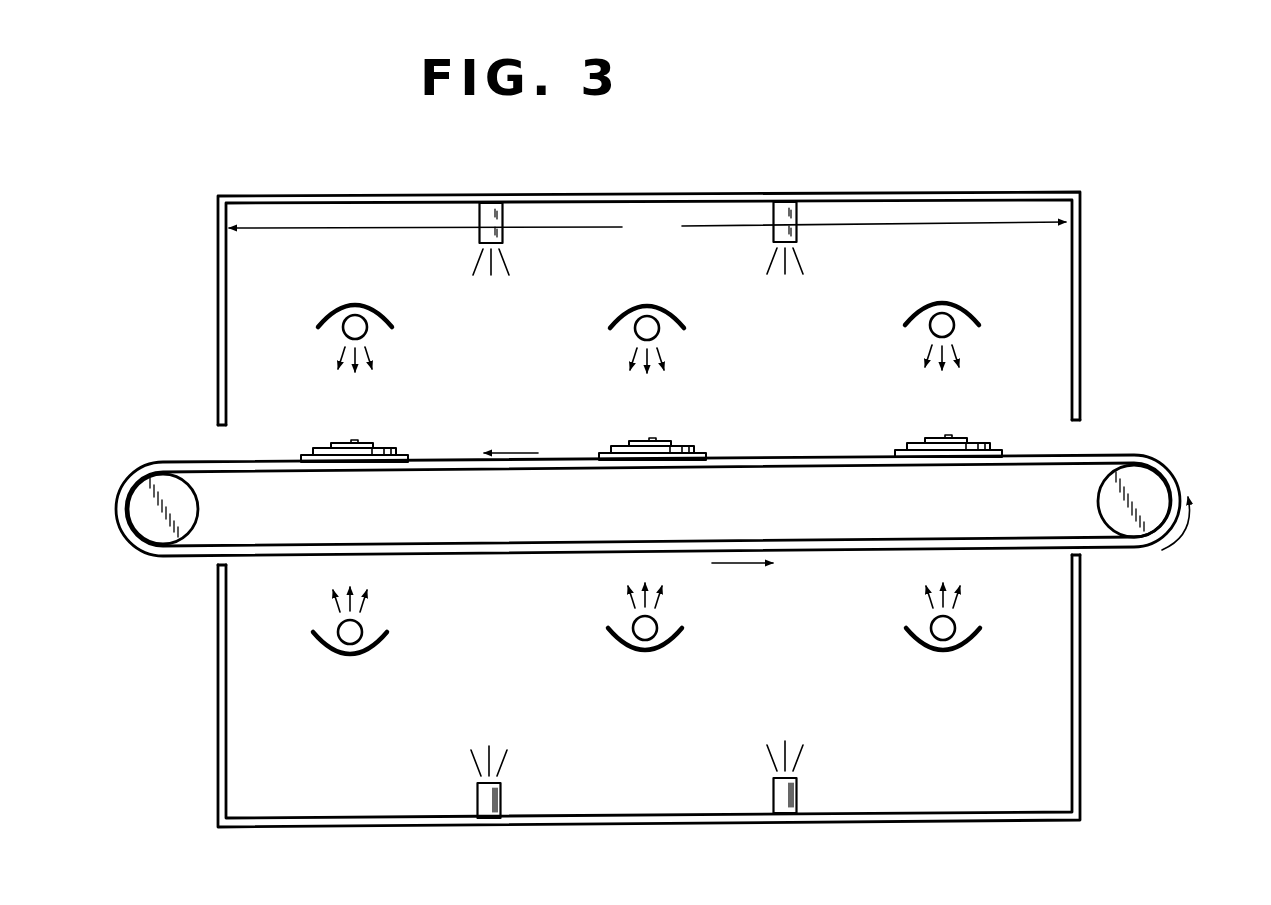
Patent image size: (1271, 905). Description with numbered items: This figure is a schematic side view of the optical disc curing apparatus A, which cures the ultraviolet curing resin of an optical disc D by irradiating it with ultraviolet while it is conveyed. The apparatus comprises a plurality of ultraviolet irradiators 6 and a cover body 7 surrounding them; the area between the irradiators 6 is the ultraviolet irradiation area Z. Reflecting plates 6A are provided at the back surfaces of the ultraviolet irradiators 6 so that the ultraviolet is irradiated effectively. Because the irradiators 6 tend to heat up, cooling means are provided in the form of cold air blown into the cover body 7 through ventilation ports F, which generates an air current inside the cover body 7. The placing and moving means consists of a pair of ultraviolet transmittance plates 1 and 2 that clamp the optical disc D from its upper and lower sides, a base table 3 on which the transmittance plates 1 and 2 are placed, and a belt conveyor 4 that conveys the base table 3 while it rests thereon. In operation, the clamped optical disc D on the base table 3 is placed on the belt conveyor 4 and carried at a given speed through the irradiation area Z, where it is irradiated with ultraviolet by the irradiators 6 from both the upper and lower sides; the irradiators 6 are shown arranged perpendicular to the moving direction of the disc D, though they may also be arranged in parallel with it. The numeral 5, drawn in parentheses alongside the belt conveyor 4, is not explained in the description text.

The optical disc curing apparatus A is at (725, 172).
The cover body 7 is at (885, 193).
The irradiation area Z is at (647, 225).
The ventilation ports F is at (503, 239).
The ultraviolet irradiators 6 is at (674, 488).
The reflecting plates 6A is at (965, 307).
The base table 3 is at (683, 420).
The ultraviolet transmittance plate 1 is at (683, 420).
The ultraviolet transmittance plate 2 is at (683, 420).
The optical disc D is at (957, 437).
The belt conveyor 4 is at (661, 473).
The conveyor belt 5 is at (1093, 457).